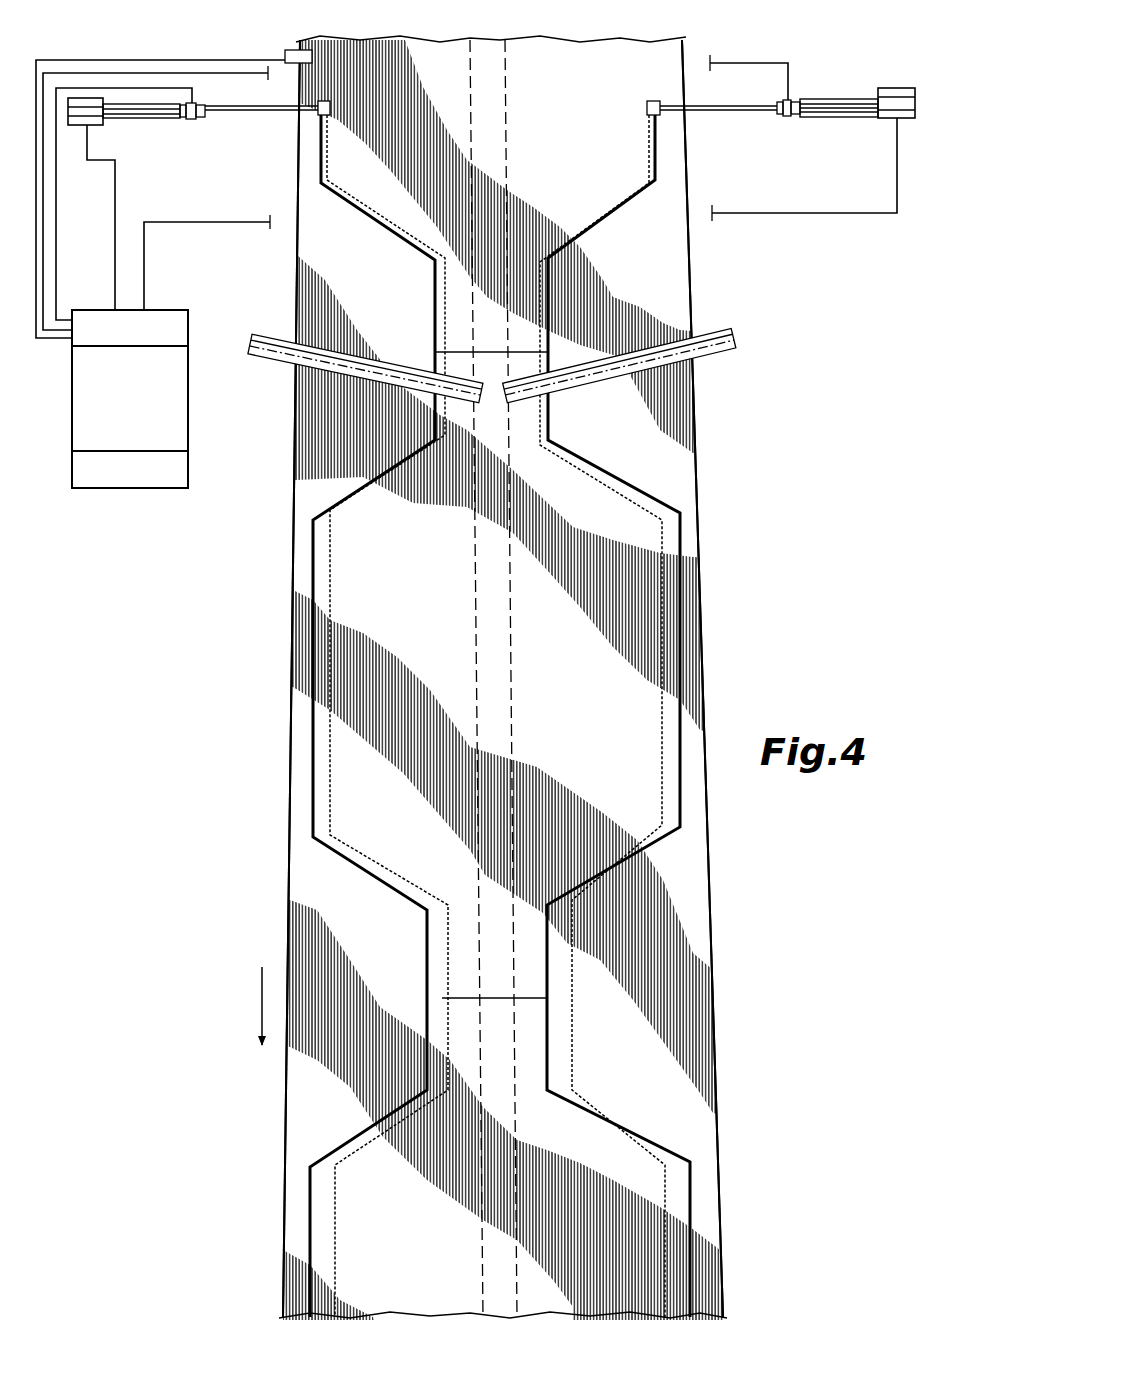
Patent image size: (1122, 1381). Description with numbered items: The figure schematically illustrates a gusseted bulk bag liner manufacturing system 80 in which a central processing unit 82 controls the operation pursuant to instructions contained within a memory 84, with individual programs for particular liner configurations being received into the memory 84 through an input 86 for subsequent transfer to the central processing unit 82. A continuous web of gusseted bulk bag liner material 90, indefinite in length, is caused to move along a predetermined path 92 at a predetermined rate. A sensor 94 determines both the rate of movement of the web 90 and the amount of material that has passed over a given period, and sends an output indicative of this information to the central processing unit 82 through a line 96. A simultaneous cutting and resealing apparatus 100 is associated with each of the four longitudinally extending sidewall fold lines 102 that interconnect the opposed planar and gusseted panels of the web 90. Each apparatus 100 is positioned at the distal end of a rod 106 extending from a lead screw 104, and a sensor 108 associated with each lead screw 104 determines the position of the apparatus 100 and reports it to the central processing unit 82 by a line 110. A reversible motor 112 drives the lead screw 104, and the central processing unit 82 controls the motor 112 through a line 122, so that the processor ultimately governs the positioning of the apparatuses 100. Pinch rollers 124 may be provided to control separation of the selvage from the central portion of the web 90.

The gusseted bulk bag liner manufacturing system 80 is at (170, 586).
The central processing unit 82 is at (188, 326).
The memory 84 is at (188, 375).
The input 86 is at (188, 472).
The continuous web of gusseted bulk bag liner material 90 is at (308, 958).
The predetermined path 92 is at (251, 1006).
The sensor 94 is at (286, 51).
The line 96 is at (63, 59).
The simultaneous cutting and resealing apparatus 100 is at (330, 108).
The sidewall fold lines 102 is at (292, 745).
The lead screw 104 is at (192, 118).
The rod 106 is at (282, 105).
The sensor 108 is at (193, 120).
The line 110 is at (123, 87).
The reversible motor 112 is at (75, 128).
The line 122 is at (115, 192).
The pinch rollers 124 is at (268, 332).